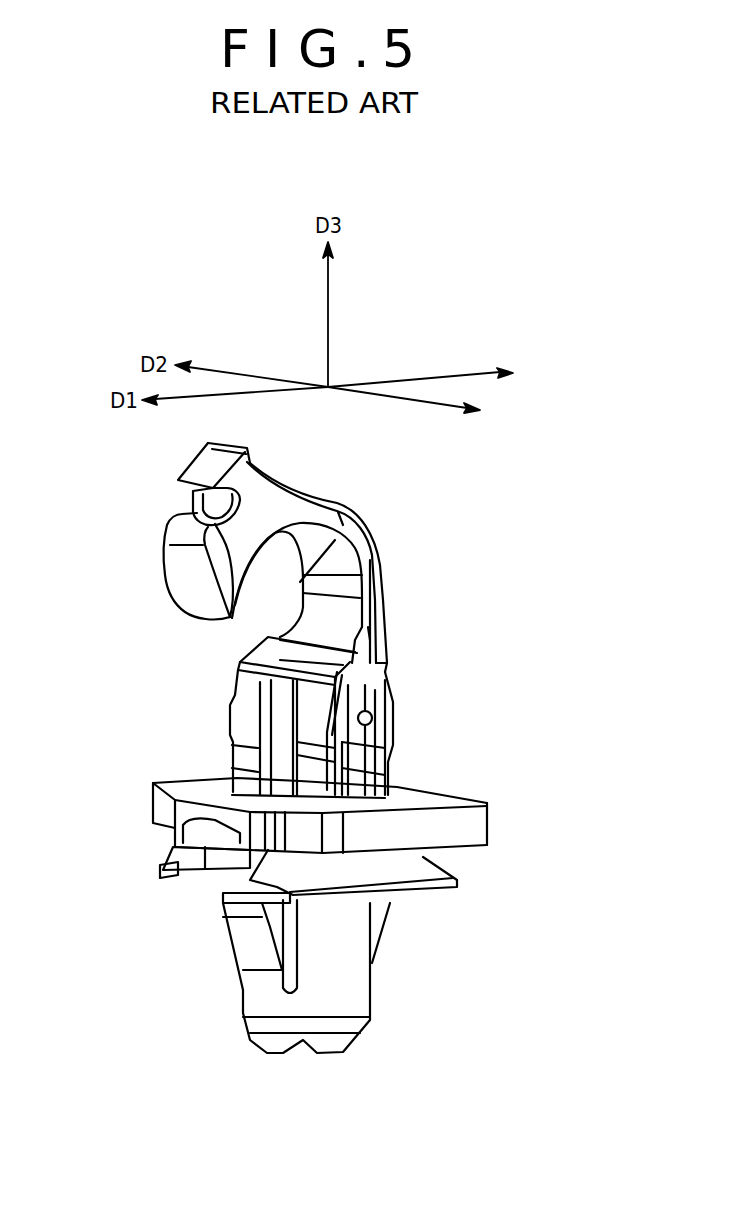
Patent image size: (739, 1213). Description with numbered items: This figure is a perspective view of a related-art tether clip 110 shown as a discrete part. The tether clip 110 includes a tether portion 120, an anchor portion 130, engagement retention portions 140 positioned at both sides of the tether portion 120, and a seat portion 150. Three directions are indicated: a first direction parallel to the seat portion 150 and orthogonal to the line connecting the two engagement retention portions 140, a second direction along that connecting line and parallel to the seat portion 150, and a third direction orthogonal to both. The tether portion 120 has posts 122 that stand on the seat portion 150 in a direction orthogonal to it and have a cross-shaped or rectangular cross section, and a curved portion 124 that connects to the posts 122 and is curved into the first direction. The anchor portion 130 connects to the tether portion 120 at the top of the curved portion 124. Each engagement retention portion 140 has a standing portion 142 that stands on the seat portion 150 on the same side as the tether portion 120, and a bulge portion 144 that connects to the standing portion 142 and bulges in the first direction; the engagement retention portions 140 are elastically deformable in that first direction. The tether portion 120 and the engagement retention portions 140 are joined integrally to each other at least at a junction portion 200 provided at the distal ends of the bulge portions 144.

The tether clip 110 is at (342, 500).
The anchor portion 130 is at (177, 563).
The tether portion 120 is at (144, 626).
The curved portion 124 is at (300, 582).
The posts 122 is at (327, 735).
The engagement retention portions 140 is at (125, 706).
The bulge portion 144 is at (362, 762).
The standing portion 142 is at (318, 775).
The junction portion 200 is at (390, 670).
The seat portion 150 is at (440, 802).